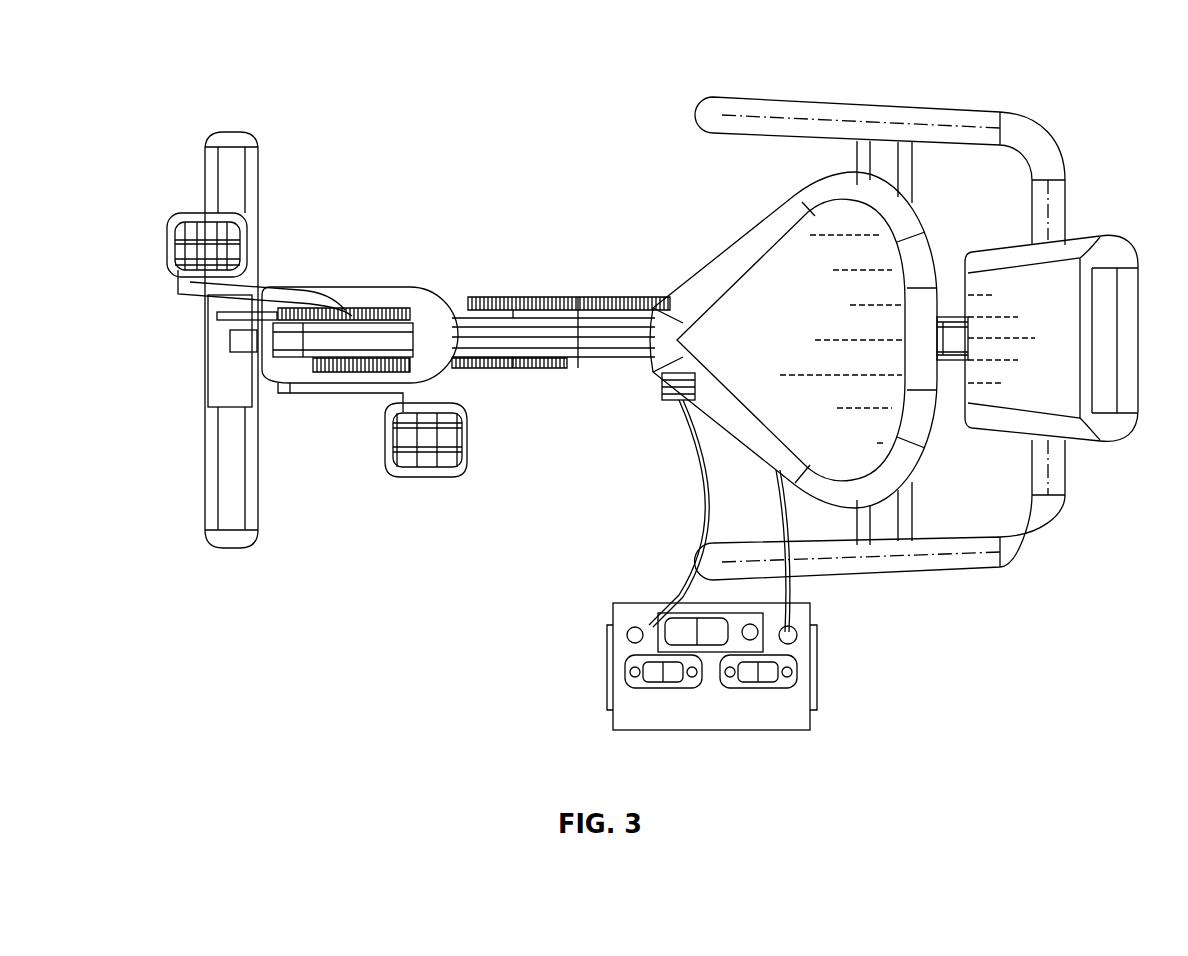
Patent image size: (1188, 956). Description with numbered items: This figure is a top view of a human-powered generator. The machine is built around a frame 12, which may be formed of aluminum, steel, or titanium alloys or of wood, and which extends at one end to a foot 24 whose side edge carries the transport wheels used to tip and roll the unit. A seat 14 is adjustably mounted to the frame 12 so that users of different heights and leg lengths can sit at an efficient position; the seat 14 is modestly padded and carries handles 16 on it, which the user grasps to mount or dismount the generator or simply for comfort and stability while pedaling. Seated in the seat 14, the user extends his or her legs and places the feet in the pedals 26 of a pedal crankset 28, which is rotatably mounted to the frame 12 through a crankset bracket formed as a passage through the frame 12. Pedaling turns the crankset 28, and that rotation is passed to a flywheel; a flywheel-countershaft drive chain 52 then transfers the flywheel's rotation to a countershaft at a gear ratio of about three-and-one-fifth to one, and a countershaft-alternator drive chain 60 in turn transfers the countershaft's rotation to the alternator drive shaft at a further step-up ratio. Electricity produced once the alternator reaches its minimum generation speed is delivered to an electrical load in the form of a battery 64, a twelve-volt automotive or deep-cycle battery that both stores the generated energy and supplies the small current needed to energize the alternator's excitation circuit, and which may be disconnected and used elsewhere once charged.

The frame 12 is at (378, 297).
The seat 14 is at (725, 260).
The handles 16 is at (743, 101).
The foot 24 is at (230, 132).
The pedals 26 is at (415, 468).
The pedal crankset 28 is at (370, 394).
The flywheel-countershaft drive chain 52 is at (520, 368).
The countershaft-alternator drive chain 60 is at (573, 297).
The battery 64 is at (713, 713).